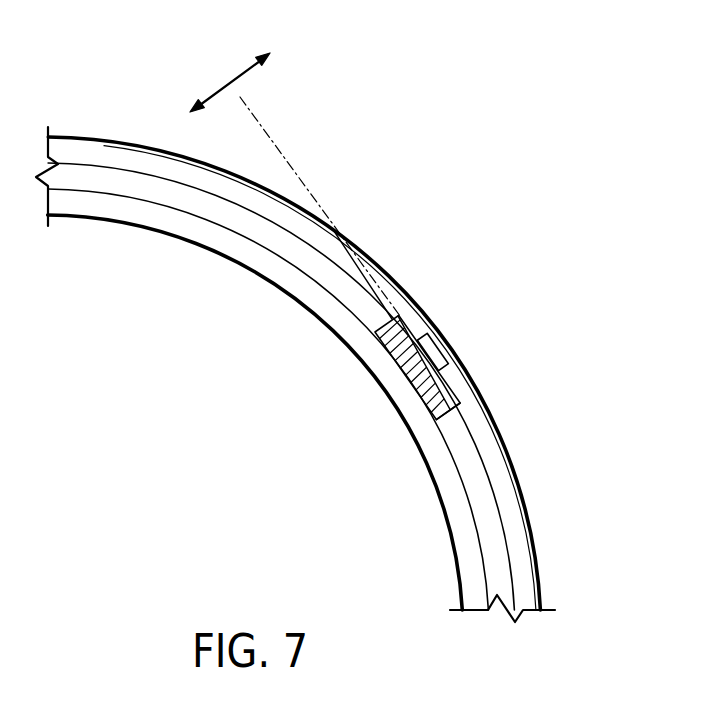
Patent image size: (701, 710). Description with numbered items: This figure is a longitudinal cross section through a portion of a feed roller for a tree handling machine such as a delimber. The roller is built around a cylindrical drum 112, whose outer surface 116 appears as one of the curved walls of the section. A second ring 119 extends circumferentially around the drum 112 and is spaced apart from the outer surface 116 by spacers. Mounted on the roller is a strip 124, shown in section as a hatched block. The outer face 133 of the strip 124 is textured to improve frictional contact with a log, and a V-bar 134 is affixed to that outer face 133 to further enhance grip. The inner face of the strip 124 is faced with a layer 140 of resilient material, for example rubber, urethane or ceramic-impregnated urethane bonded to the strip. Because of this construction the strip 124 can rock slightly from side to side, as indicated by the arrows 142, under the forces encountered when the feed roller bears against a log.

The cylindrical drum 112 is at (432, 475).
The outer surface 116 is at (487, 570).
The second ring 119 is at (517, 503).
The strip 124 is at (453, 383).
The outer face 133 is at (405, 323).
The V-bar 134 is at (437, 340).
The layer of resilient material 140 is at (442, 415).
The arrows 142 is at (226, 84).